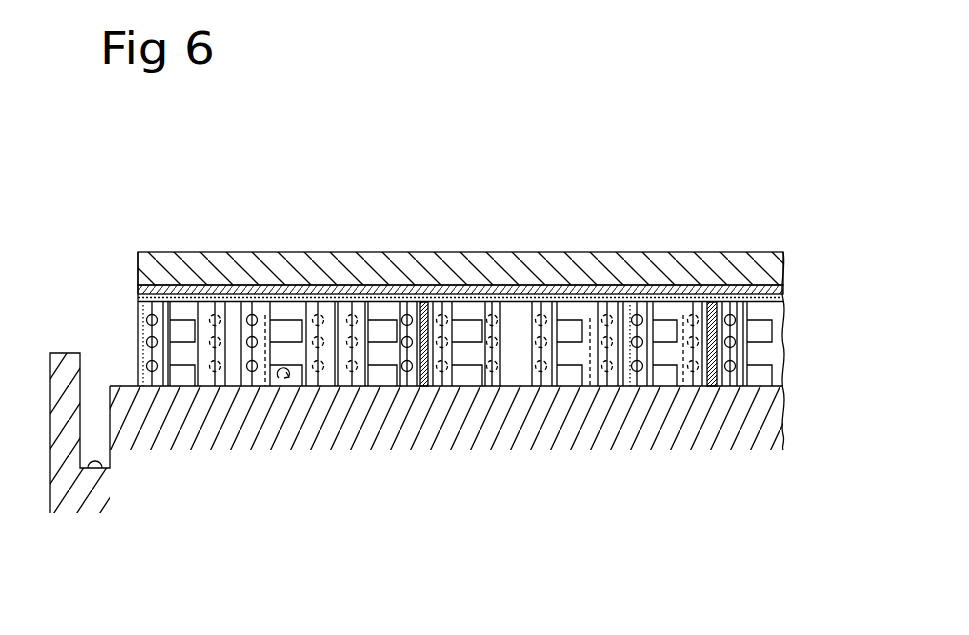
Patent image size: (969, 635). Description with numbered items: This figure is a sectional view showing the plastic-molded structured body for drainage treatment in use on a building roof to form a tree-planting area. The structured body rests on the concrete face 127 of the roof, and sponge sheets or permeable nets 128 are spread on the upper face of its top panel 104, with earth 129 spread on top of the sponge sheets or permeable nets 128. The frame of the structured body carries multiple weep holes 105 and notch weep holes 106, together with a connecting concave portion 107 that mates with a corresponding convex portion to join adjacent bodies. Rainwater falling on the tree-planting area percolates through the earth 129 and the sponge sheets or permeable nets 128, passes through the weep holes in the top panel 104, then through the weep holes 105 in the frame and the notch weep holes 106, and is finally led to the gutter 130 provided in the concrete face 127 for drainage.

The top panel 104 is at (785, 298).
The weep holes 105 is at (216, 300).
The notch weep holes 106 is at (185, 375).
The connecting concave portion 107 is at (424, 386).
The concrete face 127 is at (285, 386).
The sponge sheets or permeable nets 128 is at (785, 292).
The earth 129 is at (580, 265).
The gutter 130 is at (103, 470).